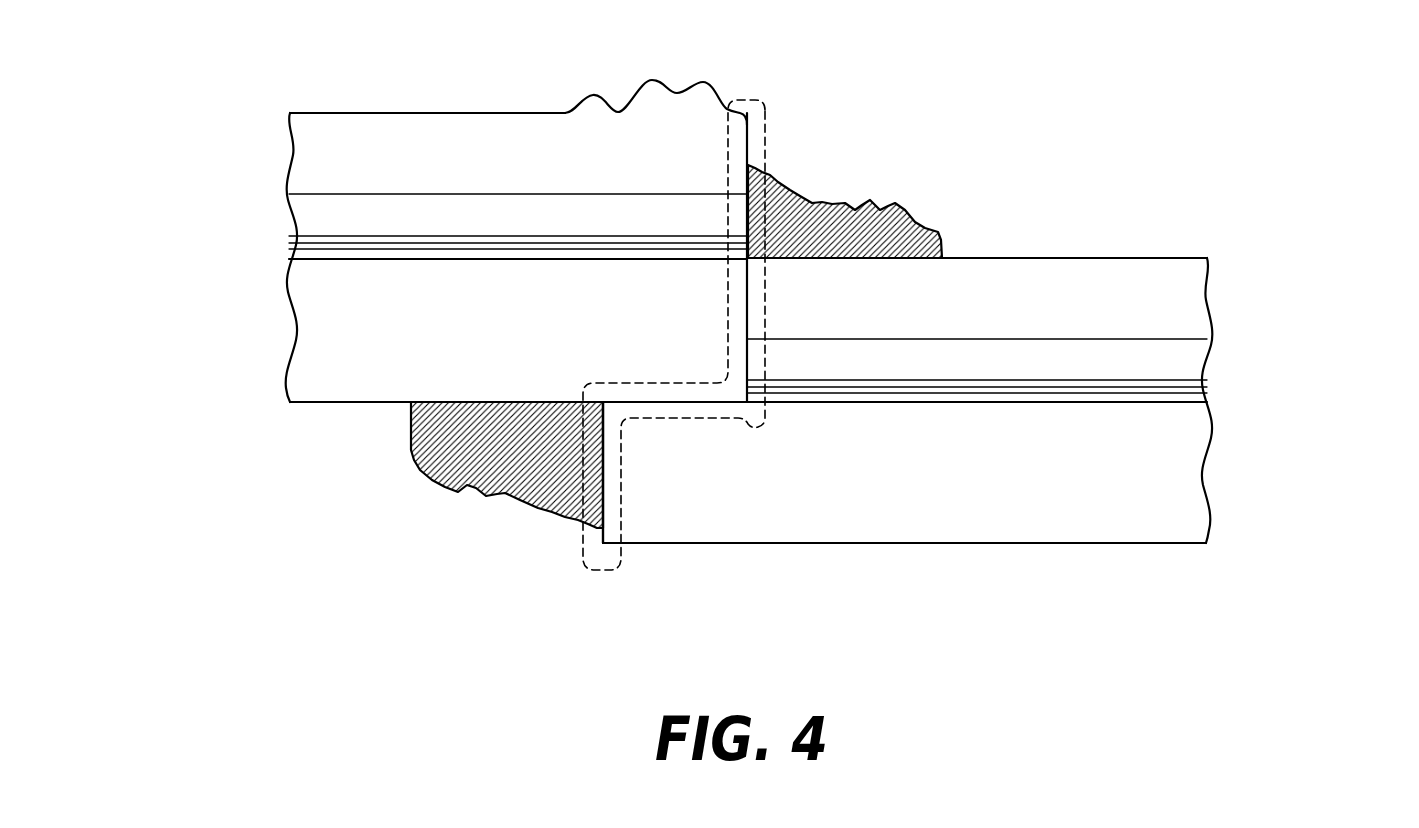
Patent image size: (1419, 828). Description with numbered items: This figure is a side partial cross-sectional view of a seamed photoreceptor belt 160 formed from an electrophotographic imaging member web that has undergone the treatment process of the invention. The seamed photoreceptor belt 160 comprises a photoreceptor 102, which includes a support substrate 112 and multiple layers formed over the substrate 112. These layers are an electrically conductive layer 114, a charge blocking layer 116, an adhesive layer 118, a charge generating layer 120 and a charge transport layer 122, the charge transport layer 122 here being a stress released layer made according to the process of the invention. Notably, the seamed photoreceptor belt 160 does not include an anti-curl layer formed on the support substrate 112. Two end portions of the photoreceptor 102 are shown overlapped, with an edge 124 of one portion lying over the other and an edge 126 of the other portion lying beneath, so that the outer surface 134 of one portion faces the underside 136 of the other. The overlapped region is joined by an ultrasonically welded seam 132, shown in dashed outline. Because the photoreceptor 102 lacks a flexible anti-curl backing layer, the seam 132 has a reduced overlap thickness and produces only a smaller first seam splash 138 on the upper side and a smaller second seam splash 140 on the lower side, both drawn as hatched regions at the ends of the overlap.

The photoreceptor 102 is at (129, 243).
The support substrate 112 is at (300, 333).
The electrically conductive layer 114 is at (290, 257).
The charge blocking layer 116 is at (290, 248).
The adhesive layer 118 is at (290, 238).
The charge generating layer 120 is at (300, 200).
The charge transport layer 122 is at (300, 147).
The first edge portion 124 is at (696, 83).
The second edge portion 126 is at (680, 549).
The ultrasonically welded seam 132 is at (742, 100).
The top surface 134 is at (410, 113).
The bottom surface 136 is at (362, 403).
The first seam splash 138 is at (834, 191).
The second seam splash 140 is at (480, 504).
The seamed photoreceptor belt 160 is at (1114, 166).